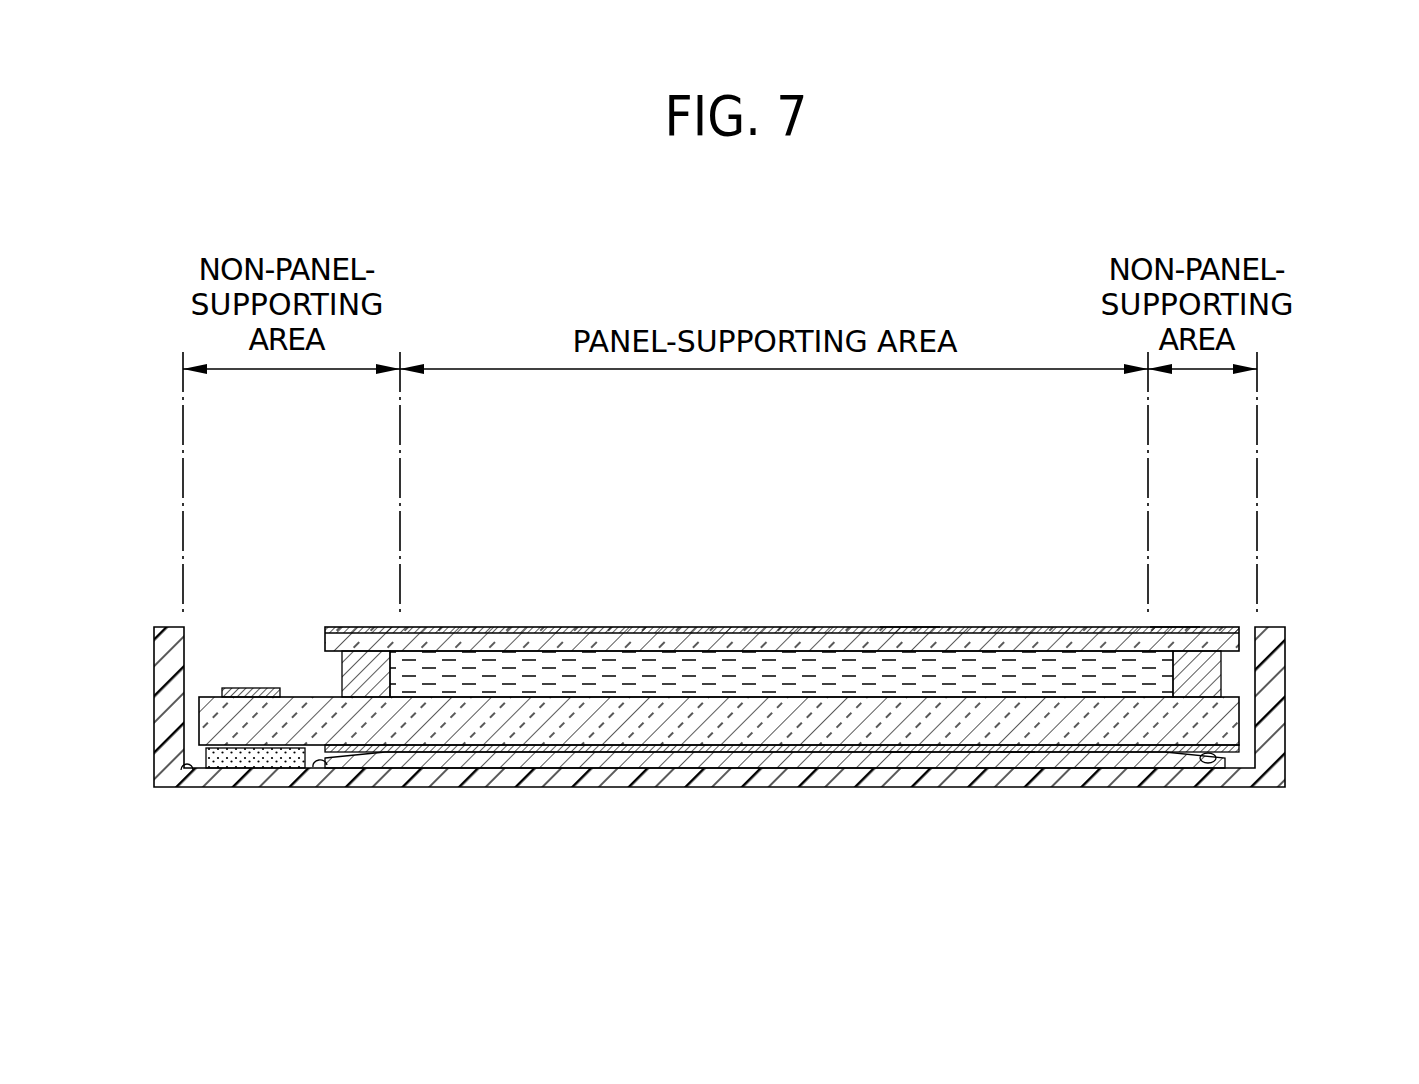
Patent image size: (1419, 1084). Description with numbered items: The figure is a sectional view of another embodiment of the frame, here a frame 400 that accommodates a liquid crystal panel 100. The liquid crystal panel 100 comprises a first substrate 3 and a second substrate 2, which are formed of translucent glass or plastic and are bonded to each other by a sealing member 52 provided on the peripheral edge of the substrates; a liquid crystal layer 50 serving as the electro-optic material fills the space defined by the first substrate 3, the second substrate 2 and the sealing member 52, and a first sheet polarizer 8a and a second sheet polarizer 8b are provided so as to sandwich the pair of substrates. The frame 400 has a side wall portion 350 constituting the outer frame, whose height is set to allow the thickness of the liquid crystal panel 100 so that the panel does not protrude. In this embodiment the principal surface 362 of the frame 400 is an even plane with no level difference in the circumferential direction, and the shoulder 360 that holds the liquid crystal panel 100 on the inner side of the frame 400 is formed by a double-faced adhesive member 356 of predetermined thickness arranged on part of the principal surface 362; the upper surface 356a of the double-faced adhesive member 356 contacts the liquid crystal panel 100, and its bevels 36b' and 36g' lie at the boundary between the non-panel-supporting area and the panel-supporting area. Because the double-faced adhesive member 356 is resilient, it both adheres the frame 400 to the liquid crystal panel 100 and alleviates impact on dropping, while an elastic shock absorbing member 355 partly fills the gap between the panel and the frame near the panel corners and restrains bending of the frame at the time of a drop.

The frame 400 is at (148, 617).
The side wall portion 350 is at (1270, 683).
The first substrate 3 is at (1022, 637).
The liquid crystal panel 100 is at (913, 612).
The first sheet polarizer 8a is at (1166, 630).
The liquid crystal layer 50 is at (598, 673).
The sealing member 52 is at (357, 680).
The second substrate 2 is at (1102, 715).
The shock absorbing member 355 is at (240, 770).
The double-faced adhesive member 356 is at (443, 760).
The shoulder 360 is at (539, 748).
The upper surface 356a is at (905, 752).
The second sheet polarizer 8b is at (1015, 753).
The principal surface 362 is at (186, 771).
The bevel 36b' is at (334, 838).
The bevel 36g' is at (1205, 823).